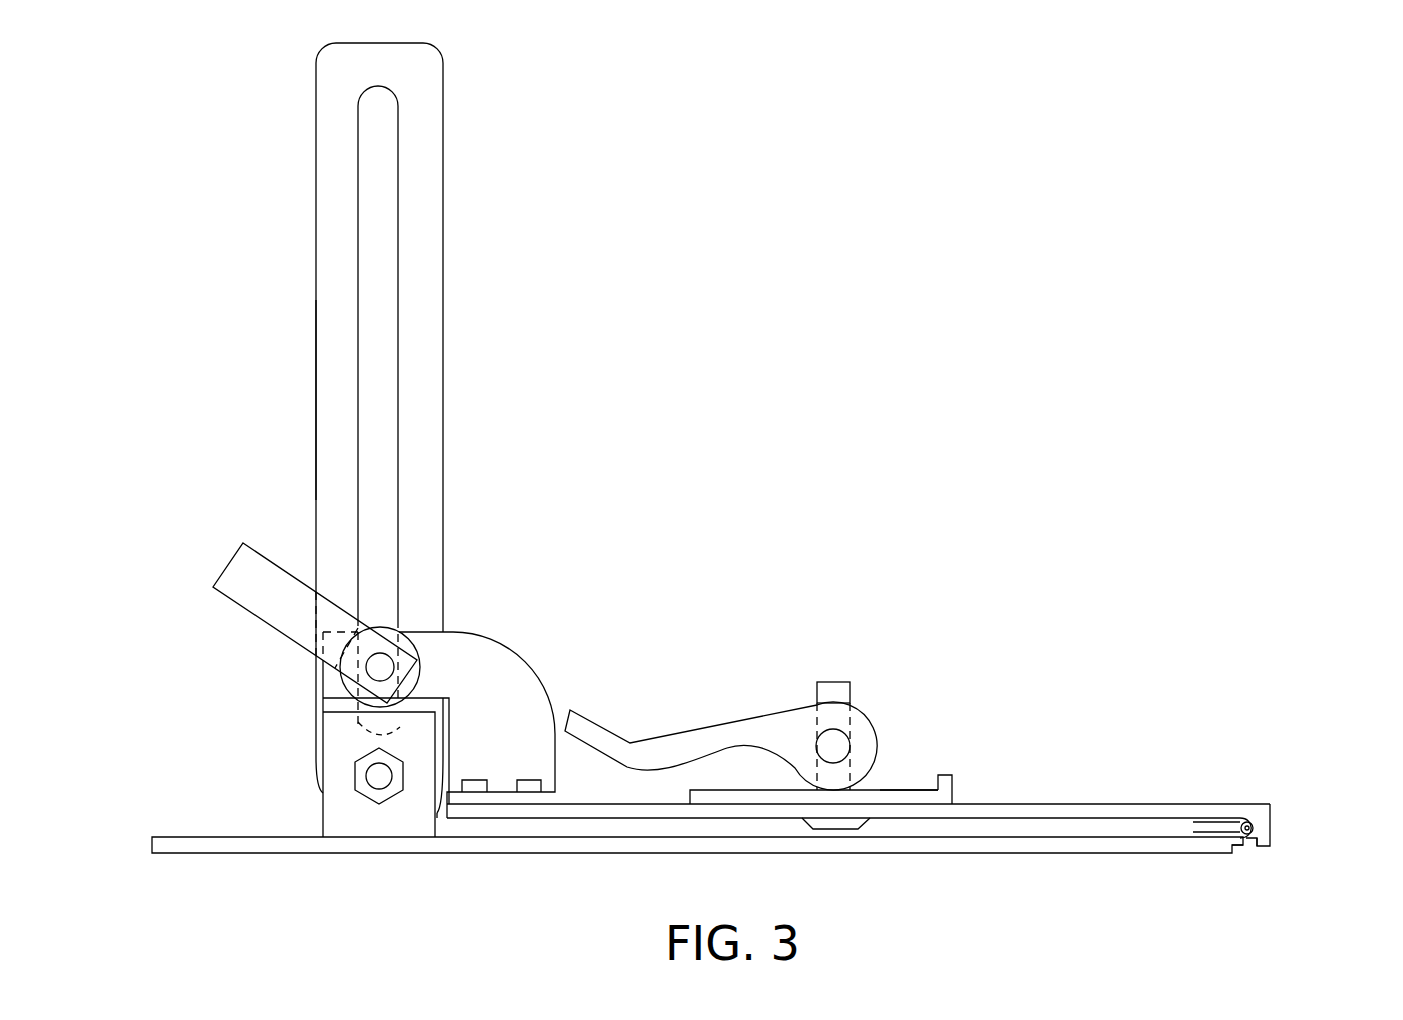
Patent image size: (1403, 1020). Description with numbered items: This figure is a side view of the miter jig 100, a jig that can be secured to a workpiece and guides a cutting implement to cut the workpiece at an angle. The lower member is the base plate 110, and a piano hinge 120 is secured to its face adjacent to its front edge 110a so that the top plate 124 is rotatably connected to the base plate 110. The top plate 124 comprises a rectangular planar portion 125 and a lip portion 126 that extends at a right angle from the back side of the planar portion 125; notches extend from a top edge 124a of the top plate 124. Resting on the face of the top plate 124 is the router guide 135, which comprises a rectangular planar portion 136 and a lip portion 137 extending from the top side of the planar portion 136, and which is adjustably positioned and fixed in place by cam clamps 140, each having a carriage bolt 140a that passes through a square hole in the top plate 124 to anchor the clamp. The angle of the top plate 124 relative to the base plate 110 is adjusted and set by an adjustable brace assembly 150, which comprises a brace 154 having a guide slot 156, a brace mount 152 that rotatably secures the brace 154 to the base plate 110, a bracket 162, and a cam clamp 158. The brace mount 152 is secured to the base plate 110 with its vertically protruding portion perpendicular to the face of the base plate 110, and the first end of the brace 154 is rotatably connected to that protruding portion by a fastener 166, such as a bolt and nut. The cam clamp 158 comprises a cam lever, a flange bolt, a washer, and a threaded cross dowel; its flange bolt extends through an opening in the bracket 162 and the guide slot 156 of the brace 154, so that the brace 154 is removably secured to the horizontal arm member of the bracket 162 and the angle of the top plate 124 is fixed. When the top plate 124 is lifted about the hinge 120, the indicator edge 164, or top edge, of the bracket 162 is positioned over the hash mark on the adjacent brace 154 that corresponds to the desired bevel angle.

The miter jig 100 is at (930, 411).
The base plate 110 is at (960, 848).
The front edge 110a is at (1240, 853).
The piano hinge 120 is at (1250, 822).
The top plate 124 is at (1028, 804).
The top edge 124a is at (437, 813).
The planar portion 125 is at (1155, 804).
The lip portion 126 is at (1280, 838).
The router guide 135 is at (880, 790).
The planar portion 136 is at (723, 806).
The lip portion 137 is at (945, 777).
The cam clamp 140 is at (720, 738).
The carriage bolt 140a is at (833, 682).
The adjustable brace assembly 150 is at (327, 323).
The brace mount 152 is at (340, 815).
The brace 154 is at (427, 279).
The guide slot 156 is at (398, 185).
The cam clamp 158 is at (247, 618).
The bracket 162 is at (500, 670).
The indicator edge 164 is at (420, 632).
The fastener 166 is at (375, 793).